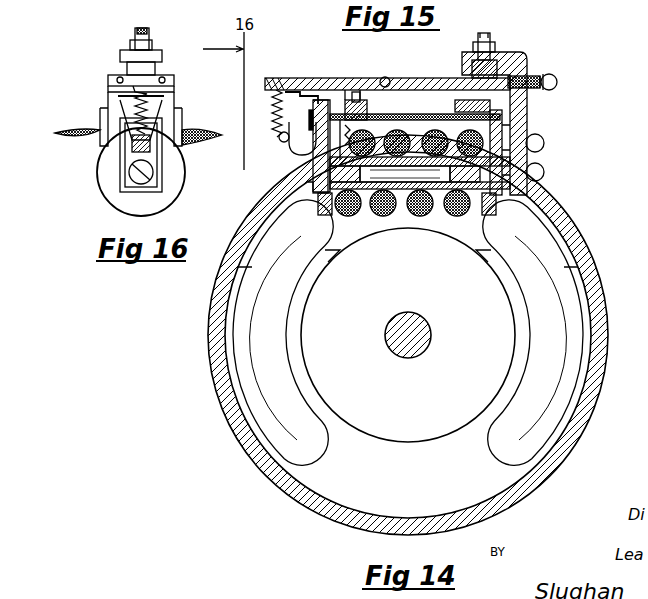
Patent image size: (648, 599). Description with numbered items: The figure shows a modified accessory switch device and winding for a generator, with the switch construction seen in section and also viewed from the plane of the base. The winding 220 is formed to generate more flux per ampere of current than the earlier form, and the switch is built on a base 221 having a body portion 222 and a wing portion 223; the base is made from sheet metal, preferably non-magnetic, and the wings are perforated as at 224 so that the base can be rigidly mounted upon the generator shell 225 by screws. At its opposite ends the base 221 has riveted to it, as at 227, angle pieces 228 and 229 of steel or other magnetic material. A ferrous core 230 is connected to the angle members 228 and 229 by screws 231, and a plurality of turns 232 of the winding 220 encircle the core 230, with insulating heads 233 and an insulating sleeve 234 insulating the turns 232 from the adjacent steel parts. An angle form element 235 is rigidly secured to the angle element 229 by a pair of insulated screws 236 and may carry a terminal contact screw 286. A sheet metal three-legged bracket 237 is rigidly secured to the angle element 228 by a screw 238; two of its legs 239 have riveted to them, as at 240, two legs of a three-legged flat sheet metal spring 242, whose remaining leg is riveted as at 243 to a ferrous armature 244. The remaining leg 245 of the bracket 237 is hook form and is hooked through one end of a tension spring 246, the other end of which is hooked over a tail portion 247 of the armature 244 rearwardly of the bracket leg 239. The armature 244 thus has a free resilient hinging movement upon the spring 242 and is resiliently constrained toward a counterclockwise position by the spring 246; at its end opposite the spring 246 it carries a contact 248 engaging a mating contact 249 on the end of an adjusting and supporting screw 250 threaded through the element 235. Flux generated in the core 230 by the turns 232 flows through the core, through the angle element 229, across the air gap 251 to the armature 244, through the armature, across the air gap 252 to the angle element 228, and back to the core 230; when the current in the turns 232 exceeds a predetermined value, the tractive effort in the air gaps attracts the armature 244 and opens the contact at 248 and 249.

In FIG. 14, the winding 220 is at (538, 262).
In FIG. 16, the base 221 is at (182, 130).
In FIG. 16, the body portion 222 is at (176, 102).
In FIG. 14, the body portion 222 is at (432, 114).
In FIG. 16, the wing portion 223 is at (88, 146).
In FIG. 16, the perforation 224 is at (72, 131).
In FIG. 14, the generator shell 225 is at (566, 208).
In FIG. 14, the rivets 227 is at (455, 130).
In FIG. 14, the angle piece 228 is at (316, 160).
In FIG. 14, the angle piece 229 is at (500, 122).
In FIG. 14, the ferrous core 230 is at (401, 175).
In FIG. 14, the screws 231 is at (316, 190).
In FIG. 14, the turns 232 is at (436, 190).
In FIG. 14, the insulating heads 233 is at (330, 215).
In FIG. 14, the insulating sleeve 234 is at (420, 190).
In FIG. 14, the angle form element 235 is at (518, 60).
In FIG. 14, the insulated screws 236 is at (541, 150).
In FIG. 14, the three-legged bracket 237 is at (300, 155).
In FIG. 14, the screw 238 is at (309, 128).
In FIG. 16, the bracket legs 239 is at (118, 96).
In FIG. 14, the bracket legs 239 is at (301, 103).
In FIG. 14, the rivets 240 is at (306, 78).
In FIG. 14, the three-legged flat sheet metal spring 242 is at (350, 78).
In FIG. 14, the rivet 243 is at (386, 78).
In FIG. 14, the ferrous armature 244 is at (466, 52).
In FIG. 14, the hook-form leg 245 is at (279, 138).
In FIG. 14, the tension spring 246 is at (271, 104).
In FIG. 14, the tail portion 247 is at (272, 78).
In FIG. 14, the contact 248 is at (472, 72).
In FIG. 14, the mating contact 249 is at (492, 70).
In FIG. 14, the adjusting and supporting screw 250 is at (490, 46).
In FIG. 14, the air gap 251 is at (470, 100).
In FIG. 14, the air gap 252 is at (367, 108).
In FIG. 14, the terminal contact screw 286 is at (540, 76).